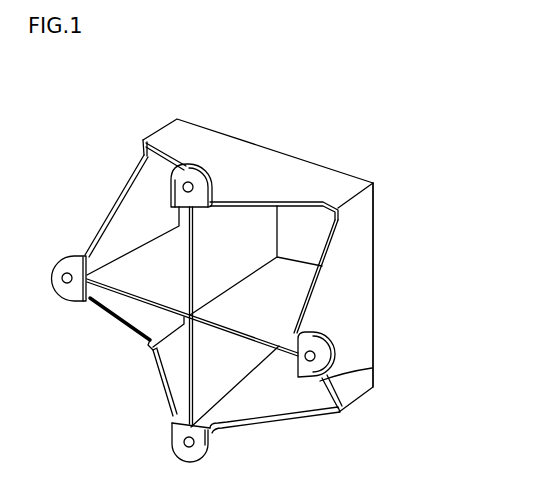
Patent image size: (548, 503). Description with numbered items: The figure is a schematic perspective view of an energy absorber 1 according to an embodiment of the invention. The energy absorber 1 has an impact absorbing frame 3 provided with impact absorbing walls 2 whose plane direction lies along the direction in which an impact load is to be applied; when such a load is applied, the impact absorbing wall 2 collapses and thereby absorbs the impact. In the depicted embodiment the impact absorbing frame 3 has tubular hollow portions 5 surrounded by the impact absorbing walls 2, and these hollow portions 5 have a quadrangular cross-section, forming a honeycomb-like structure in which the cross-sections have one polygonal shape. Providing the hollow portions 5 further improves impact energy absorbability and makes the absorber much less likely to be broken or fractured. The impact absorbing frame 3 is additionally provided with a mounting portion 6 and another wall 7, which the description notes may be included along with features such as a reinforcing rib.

The energy absorber 1 is at (409, 137).
The impact absorbing wall 2 is at (211, 148).
The impact absorbing frame 3 is at (392, 290).
The hollow portion 5 is at (165, 273).
The mounting portion 6 is at (372, 368).
The another wall 7 is at (305, 238).